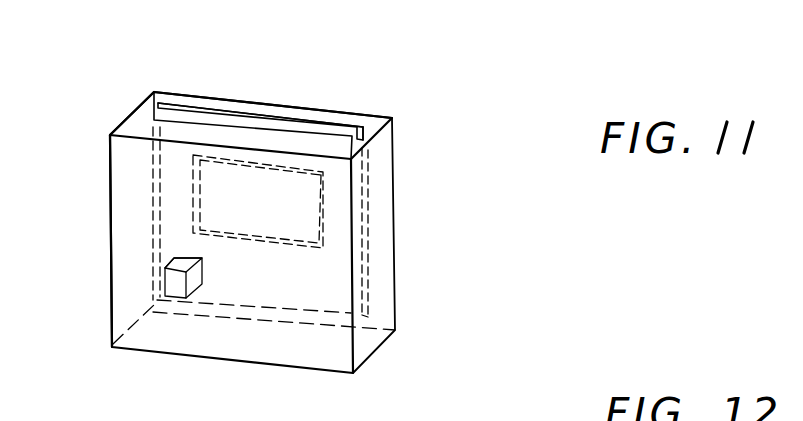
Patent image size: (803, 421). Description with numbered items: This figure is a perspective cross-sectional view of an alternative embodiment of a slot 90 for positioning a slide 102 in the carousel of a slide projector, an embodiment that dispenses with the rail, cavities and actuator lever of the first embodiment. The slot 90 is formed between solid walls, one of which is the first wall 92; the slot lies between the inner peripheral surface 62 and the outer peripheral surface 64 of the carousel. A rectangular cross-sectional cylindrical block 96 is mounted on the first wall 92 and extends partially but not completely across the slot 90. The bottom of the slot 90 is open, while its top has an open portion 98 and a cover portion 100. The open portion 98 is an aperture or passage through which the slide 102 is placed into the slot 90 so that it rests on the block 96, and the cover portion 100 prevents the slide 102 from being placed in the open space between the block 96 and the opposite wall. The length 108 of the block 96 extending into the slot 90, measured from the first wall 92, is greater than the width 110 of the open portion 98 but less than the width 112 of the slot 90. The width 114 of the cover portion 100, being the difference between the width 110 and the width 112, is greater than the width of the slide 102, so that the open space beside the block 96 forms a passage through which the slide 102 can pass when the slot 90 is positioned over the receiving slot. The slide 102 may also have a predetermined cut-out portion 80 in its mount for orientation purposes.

The inner peripheral surface 62 is at (385, 358).
The outer peripheral surface 64 is at (127, 164).
The cut-out portion 80 is at (204, 272).
The slot 90 is at (446, 108).
The first wall 92 is at (313, 317).
The block 96 is at (181, 306).
The open portion 98 is at (176, 91).
The cover portion 100 is at (314, 148).
The slide 102 is at (173, 202).
The length of the block 108 is at (164, 262).
The width of the open portion 110 is at (352, 140).
The width of the slot 112 is at (148, 84).
The width of the cover portion 114 is at (375, 147).